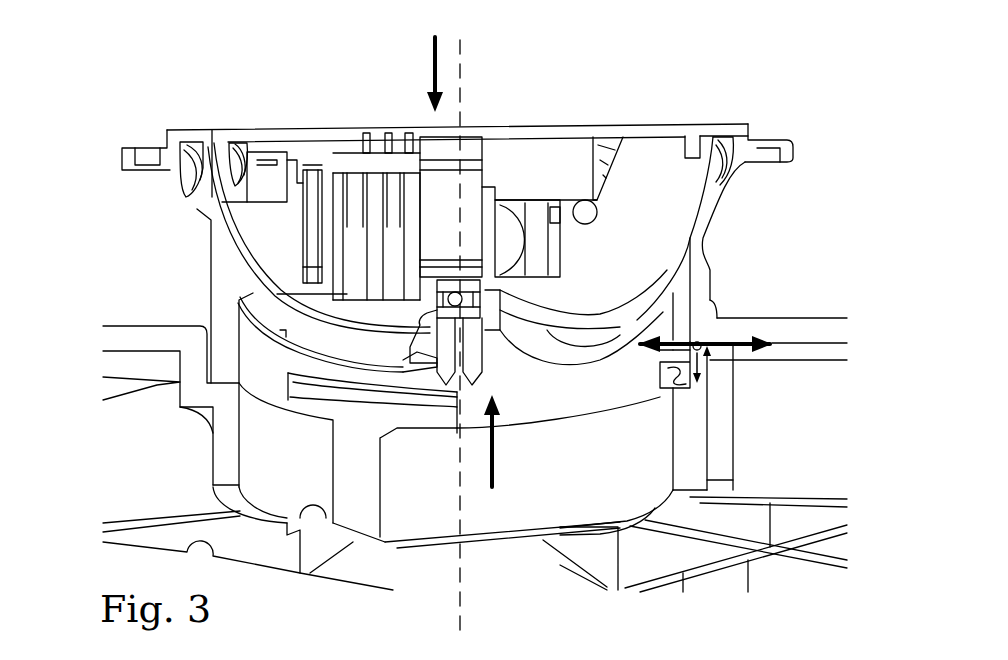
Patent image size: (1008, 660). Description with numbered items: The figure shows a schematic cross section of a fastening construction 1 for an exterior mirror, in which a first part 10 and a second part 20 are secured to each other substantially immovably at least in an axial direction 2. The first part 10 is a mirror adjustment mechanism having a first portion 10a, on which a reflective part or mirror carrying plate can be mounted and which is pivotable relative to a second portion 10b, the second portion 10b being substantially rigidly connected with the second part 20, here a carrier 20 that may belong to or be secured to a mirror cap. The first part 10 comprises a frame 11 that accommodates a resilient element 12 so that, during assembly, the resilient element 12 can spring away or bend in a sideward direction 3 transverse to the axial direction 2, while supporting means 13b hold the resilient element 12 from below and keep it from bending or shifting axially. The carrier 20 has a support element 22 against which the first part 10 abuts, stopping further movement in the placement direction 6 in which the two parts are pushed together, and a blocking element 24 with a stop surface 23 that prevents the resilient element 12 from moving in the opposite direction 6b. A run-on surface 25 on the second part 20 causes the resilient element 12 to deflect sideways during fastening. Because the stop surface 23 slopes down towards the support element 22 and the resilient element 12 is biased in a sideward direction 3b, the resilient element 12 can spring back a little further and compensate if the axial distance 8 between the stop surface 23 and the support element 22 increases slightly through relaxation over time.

The fastening construction 1 is at (108, 214).
The axial direction 2 is at (460, 103).
The sideward direction 3 is at (670, 343).
The sideward direction of bias 3b is at (722, 345).
The placement direction 6 is at (430, 62).
The direction opposite to the placement direction 6b is at (493, 477).
The axial distance 8 is at (658, 362).
The first part 10 is at (742, 226).
The first portion 10a is at (693, 183).
The second portion 10b is at (705, 218).
The frame 11 is at (663, 374).
The resilient element 12 is at (680, 366).
The supporting means 13b is at (687, 385).
The second part 20 is at (775, 290).
The support element 22 is at (227, 370).
The stop surface 23 is at (706, 357).
The blocking element 24 is at (702, 322).
The run-on surface 25 is at (688, 303).